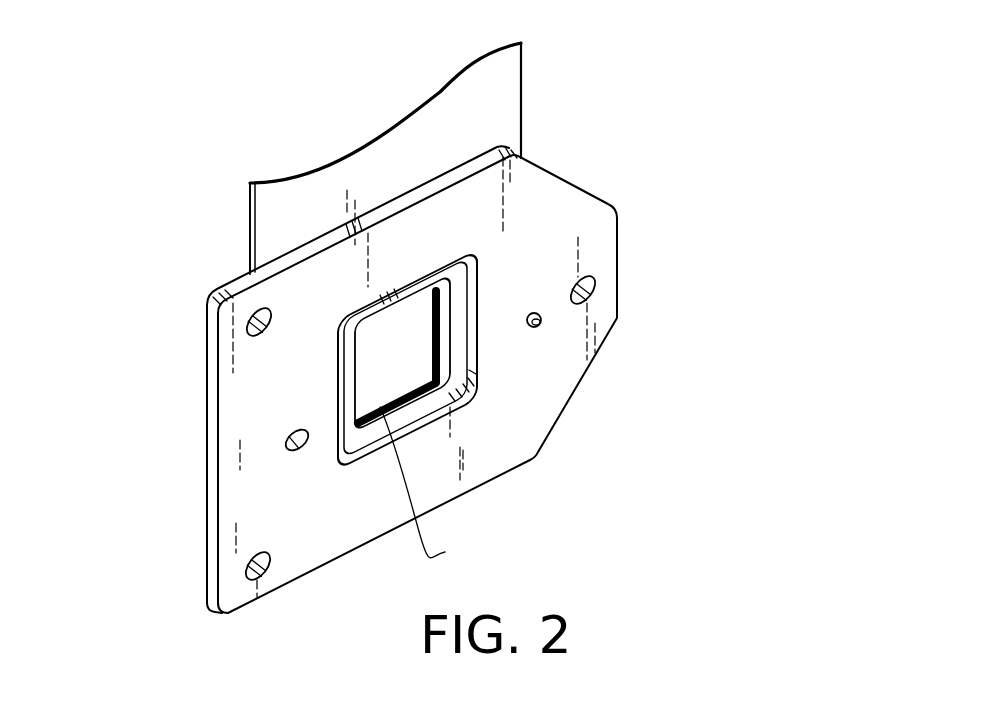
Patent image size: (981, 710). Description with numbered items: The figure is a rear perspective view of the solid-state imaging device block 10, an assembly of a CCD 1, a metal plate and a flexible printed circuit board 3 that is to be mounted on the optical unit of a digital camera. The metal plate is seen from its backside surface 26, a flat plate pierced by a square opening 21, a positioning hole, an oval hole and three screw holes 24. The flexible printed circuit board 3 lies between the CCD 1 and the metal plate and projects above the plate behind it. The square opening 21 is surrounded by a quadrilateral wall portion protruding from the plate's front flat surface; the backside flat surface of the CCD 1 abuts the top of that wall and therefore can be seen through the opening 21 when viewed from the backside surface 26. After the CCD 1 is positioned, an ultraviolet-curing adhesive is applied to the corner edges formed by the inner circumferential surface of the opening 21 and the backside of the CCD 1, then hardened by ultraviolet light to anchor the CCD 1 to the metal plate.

The CCD 1 is at (392, 330).
The flexible printed circuit board 3 is at (498, 107).
The solid-state imaging device block 10 is at (152, 279).
The square opening 21 is at (408, 345).
The screw holes 24 is at (257, 337).
The backside surface 26 is at (525, 422).